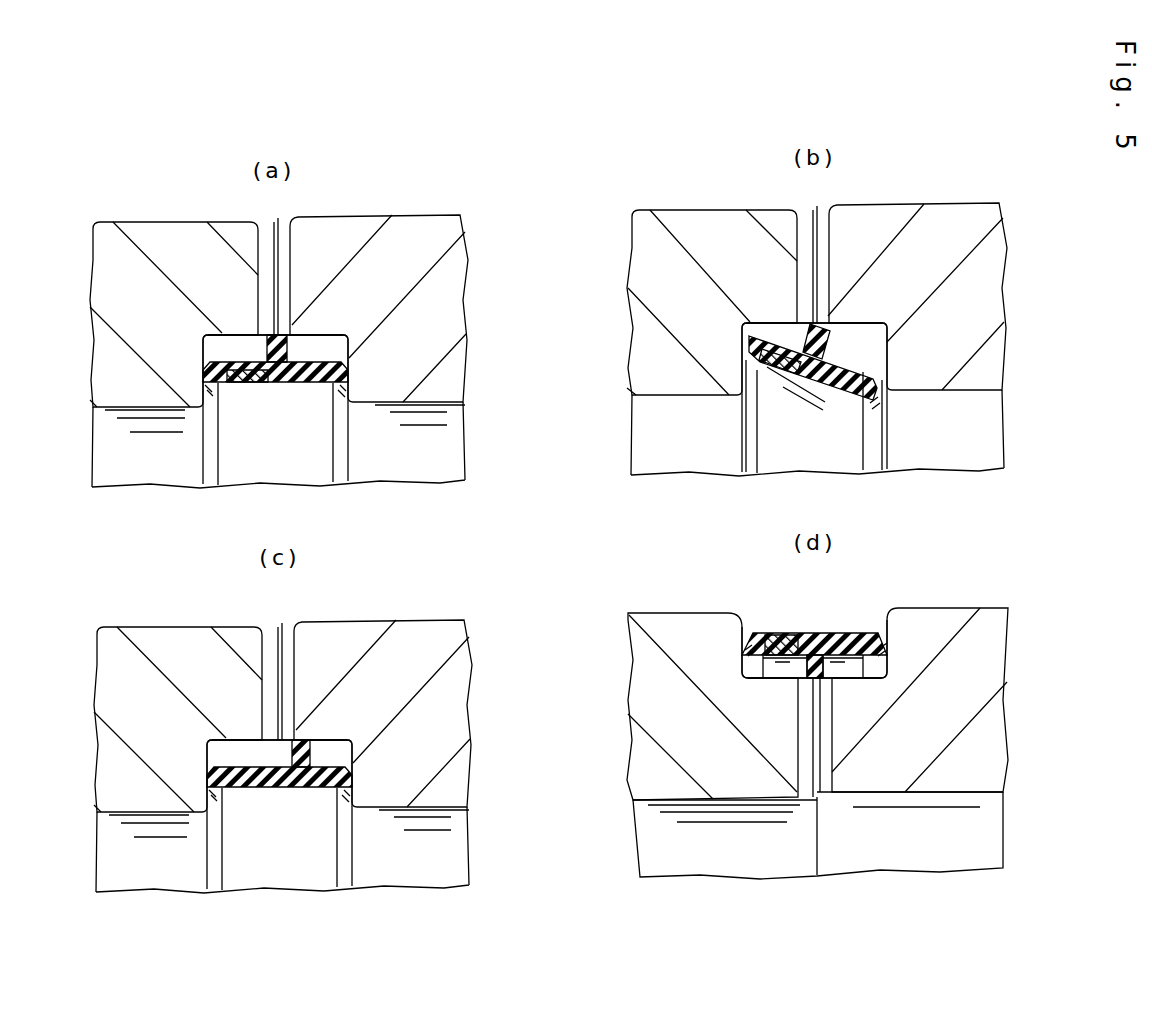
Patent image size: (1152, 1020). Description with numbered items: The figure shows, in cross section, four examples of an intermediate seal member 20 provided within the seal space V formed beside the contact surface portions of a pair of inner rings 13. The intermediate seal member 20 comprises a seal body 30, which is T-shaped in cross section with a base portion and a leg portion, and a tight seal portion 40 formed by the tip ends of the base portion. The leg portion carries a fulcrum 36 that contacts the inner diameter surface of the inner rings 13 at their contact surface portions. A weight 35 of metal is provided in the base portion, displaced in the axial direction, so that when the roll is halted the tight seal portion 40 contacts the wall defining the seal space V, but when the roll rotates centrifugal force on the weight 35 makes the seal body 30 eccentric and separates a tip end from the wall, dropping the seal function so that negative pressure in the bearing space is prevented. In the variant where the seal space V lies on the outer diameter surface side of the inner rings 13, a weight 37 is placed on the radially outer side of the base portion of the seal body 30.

The inner ring 13 is at (98, 282).
The intermediate seal member 20 is at (276, 452).
The seal body 30 is at (292, 383).
The weight 35 is at (238, 383).
The fulcrum 36 is at (284, 342).
The weight 37 is at (785, 633).
The tight seal portion 40 is at (348, 347).
The seal space V is at (251, 353).